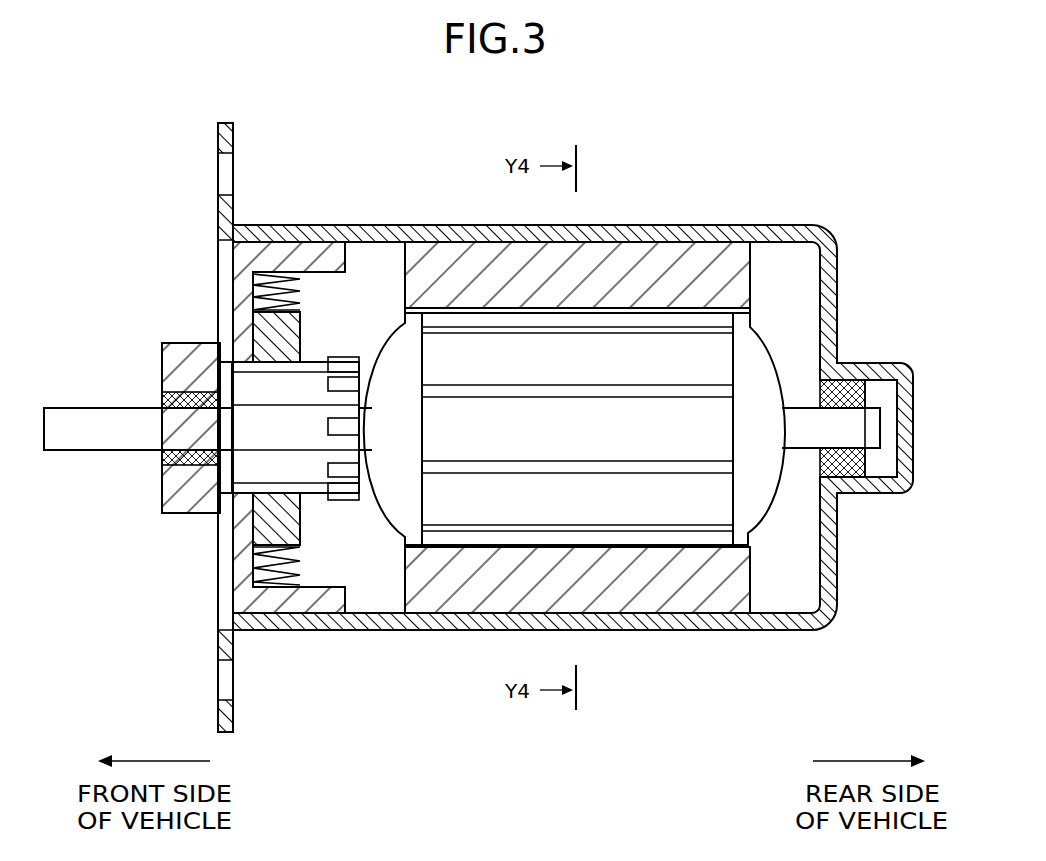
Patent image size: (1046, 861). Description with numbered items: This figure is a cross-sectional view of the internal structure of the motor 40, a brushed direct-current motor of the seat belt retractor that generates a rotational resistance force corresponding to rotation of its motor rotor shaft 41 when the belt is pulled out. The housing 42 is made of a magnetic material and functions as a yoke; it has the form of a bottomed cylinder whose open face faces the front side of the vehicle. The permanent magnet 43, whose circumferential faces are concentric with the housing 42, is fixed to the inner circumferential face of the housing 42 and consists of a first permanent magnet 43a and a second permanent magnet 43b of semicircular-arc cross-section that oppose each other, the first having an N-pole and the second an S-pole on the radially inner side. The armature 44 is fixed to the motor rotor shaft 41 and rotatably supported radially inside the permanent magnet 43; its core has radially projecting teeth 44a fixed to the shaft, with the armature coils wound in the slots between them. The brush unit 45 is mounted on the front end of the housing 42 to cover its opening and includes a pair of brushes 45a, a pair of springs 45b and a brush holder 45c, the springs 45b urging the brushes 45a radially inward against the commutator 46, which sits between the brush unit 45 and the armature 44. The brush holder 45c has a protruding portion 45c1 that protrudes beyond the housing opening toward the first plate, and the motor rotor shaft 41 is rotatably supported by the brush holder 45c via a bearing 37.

The bearing 37 is at (865, 363).
The motor 40 is at (810, 222).
The motor rotor shaft 41 is at (170, 437).
The housing 42 is at (838, 272).
The permanent magnet 43 is at (666, 242).
The first permanent magnet 43a is at (437, 613).
The second permanent magnet 43b is at (432, 242).
The armature 44 is at (786, 522).
The teeth 44a is at (723, 352).
The brush unit 45 is at (203, 242).
The brushes 45a is at (300, 318).
The springs 45b is at (293, 272).
The brush holder 45c is at (225, 268).
The protruding portion 45c1 is at (180, 513).
The commutator 46 is at (328, 356).